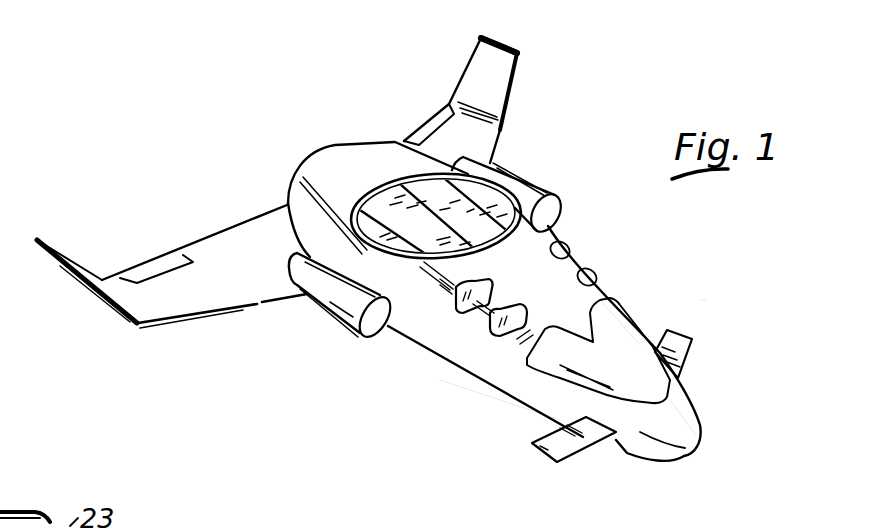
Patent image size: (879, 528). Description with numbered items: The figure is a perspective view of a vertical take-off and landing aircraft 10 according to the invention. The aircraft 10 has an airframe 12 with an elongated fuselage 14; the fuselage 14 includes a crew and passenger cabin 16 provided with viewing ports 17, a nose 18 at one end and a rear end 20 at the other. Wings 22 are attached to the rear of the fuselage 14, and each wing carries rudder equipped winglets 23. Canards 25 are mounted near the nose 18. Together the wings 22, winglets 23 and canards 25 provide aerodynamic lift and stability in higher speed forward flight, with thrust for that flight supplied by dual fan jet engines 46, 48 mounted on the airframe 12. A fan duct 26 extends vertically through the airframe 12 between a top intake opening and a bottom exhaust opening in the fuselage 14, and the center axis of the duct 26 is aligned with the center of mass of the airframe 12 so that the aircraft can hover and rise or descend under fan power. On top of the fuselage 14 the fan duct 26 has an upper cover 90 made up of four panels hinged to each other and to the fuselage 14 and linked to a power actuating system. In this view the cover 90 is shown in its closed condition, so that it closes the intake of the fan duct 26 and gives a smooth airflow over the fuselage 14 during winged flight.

The vertical take-off and landing aircraft 10 is at (697, 293).
The airframe 12 is at (421, 347).
The fuselage 14 is at (479, 367).
The crew and passenger cabin 16 is at (633, 332).
The viewing ports 17 is at (510, 312).
The nose 18 is at (687, 455).
The rear end 20 is at (328, 153).
The wings 22 is at (500, 135).
The rudder equipped winglets 23 is at (520, 48).
The canards 25 is at (682, 348).
The fan duct 26 is at (390, 182).
The fan jet engine 46 is at (527, 183).
The fan jet engine 48 is at (330, 312).
The upper cover 90 is at (433, 188).